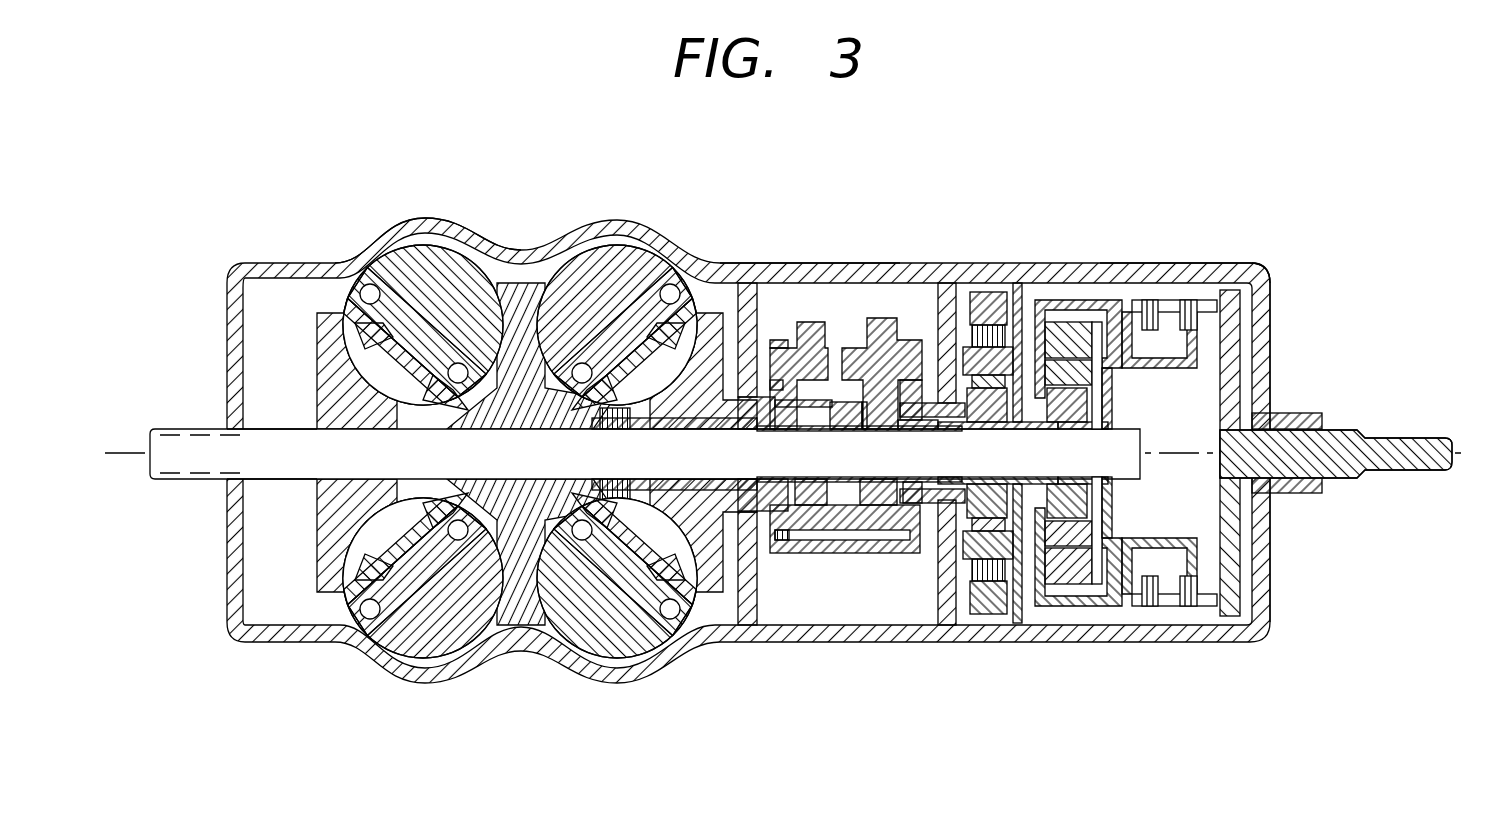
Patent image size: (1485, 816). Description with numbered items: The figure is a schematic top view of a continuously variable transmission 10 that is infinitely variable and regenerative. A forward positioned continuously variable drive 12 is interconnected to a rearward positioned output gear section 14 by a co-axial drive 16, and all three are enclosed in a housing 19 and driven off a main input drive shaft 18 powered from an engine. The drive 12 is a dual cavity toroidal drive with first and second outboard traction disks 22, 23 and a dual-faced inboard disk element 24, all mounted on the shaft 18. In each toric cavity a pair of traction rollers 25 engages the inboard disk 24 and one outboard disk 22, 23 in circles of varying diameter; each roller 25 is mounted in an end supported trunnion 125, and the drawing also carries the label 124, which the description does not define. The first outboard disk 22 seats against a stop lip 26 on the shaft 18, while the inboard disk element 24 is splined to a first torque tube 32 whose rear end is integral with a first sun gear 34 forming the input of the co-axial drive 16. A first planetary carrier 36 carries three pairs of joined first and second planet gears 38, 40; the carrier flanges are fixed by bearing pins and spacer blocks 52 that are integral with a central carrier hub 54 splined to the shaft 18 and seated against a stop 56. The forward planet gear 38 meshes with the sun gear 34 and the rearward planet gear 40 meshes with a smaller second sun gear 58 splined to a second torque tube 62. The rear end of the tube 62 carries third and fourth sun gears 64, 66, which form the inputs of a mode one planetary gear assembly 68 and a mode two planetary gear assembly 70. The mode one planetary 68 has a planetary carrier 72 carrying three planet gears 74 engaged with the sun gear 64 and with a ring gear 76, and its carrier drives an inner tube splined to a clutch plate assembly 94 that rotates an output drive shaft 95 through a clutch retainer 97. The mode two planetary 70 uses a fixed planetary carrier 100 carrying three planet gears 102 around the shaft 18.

The continuously variable transmission 10 is at (712, 192).
The continuously variable drive 12 is at (541, 228).
The output gear section 14 is at (1103, 238).
The co-axial drive 16 is at (848, 252).
The input drive shaft 18 is at (259, 454).
The housing 19 is at (488, 220).
The first outboard traction disk 22 is at (322, 417).
The second outboard traction disk 23 is at (677, 417).
The inboard traction disk element 24 is at (494, 424).
The traction roller 25 is at (362, 337).
The stop lip 26 is at (312, 442).
The first torque tube 32 is at (647, 445).
The first sun gear 34 is at (812, 420).
The first planetary carrier 36 is at (903, 266).
The first planet gear 38 is at (800, 264).
The second planet gear 40 is at (883, 266).
The spacer block 52 is at (842, 547).
The carrier hub 54 is at (845, 404).
The stop 56 is at (877, 420).
The second sun gear 58 is at (885, 447).
The second torque tube 62 is at (937, 435).
The third sun gear 64 is at (1093, 410).
The fourth sun gear 66 is at (990, 402).
The mode one planetary gear assembly 68 is at (1108, 284).
The mode two planetary gear assembly 70 is at (988, 284).
The planetary carrier 72 is at (1097, 370).
The planet gear 74 is at (1078, 347).
The ring gear 76 is at (1070, 295).
The clutch plate assembly 94 is at (1198, 310).
The output drive shaft 95 is at (1265, 457).
The clutch retainer 97 is at (1232, 355).
The fixed planetary carrier 100 is at (1018, 290).
The planet gear 102 is at (983, 266).
The spring 124 is at (1158, 290).
The trunnion 125 is at (423, 327).